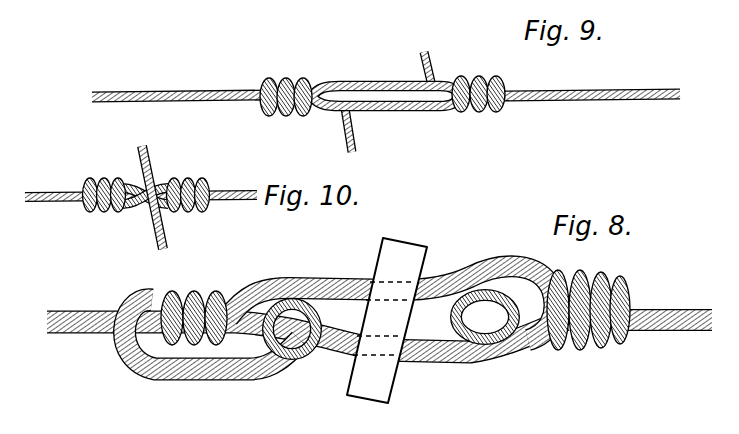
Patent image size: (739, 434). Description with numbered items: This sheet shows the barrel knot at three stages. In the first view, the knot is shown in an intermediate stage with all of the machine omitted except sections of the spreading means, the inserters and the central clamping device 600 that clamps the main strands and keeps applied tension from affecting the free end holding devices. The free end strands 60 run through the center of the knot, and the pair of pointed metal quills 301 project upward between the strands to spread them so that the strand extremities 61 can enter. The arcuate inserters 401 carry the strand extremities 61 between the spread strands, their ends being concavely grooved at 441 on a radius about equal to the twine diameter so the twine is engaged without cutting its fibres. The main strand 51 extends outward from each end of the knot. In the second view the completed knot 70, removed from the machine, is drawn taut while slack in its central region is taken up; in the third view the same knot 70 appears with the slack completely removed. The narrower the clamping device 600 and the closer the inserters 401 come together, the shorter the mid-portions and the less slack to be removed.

In FIG. 9, the first cable 51 is at (180, 77).
In FIG. 8, the first cable 51 is at (702, 292).
In FIG. 9, the extremities of the free end strands 61 is at (433, 58).
In FIG. 8, the extremities of the free end strands 61 is at (312, 292).
In FIG. 9, the completed knot 70 is at (382, 107).
In FIG. 10, the completed knot 70 is at (141, 197).
In FIG. 8, the free end strands 60 is at (436, 366).
In FIG. 8, the pointed metal quills 301 is at (520, 265).
In FIG. 8, the arcuate inserters 401 is at (289, 374).
In FIG. 8, the concave grooves 441 is at (493, 342).
In FIG. 8, the central clamping device 600 is at (387, 334).